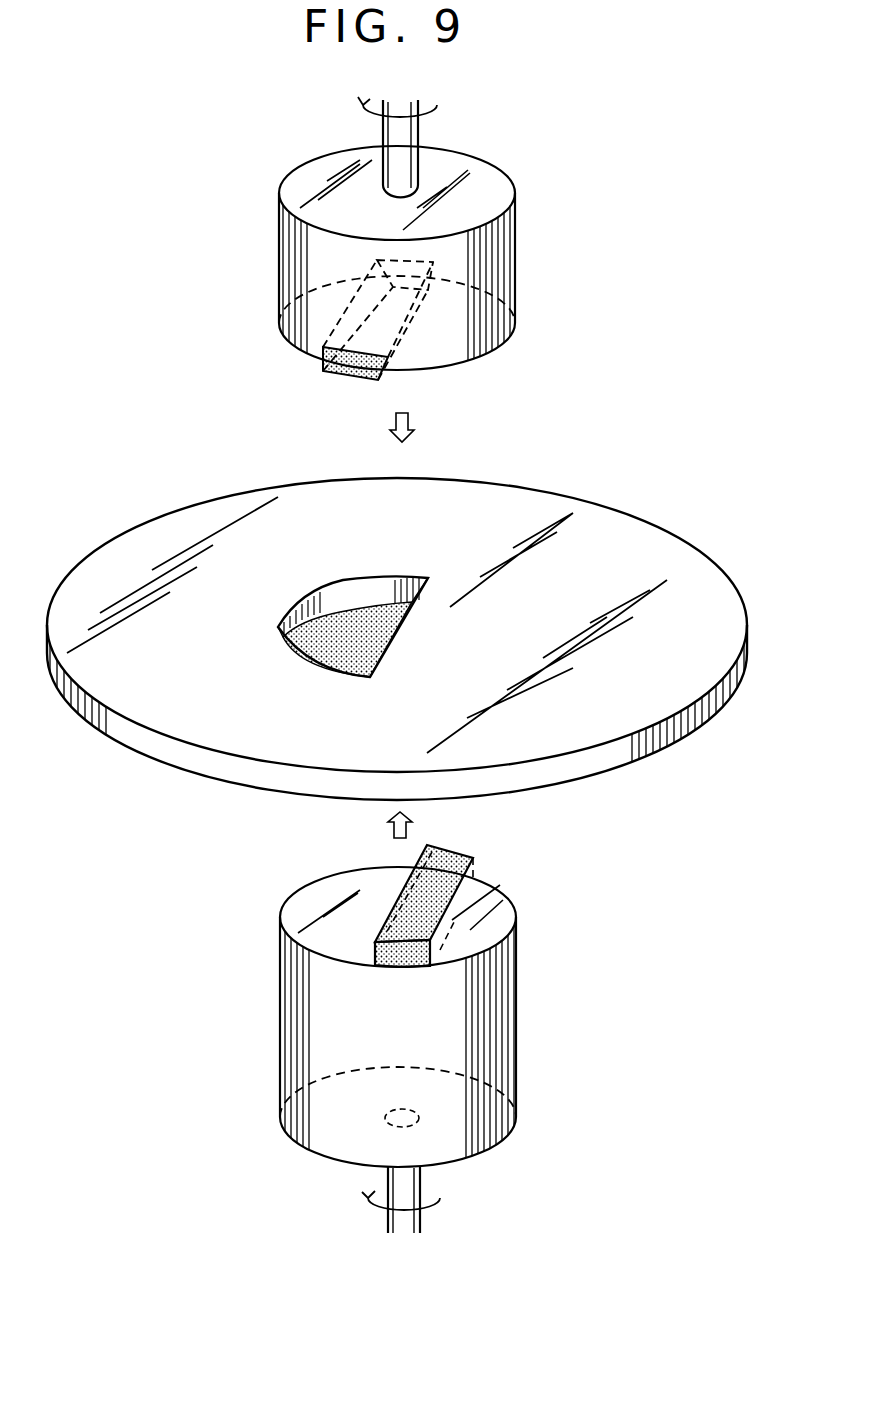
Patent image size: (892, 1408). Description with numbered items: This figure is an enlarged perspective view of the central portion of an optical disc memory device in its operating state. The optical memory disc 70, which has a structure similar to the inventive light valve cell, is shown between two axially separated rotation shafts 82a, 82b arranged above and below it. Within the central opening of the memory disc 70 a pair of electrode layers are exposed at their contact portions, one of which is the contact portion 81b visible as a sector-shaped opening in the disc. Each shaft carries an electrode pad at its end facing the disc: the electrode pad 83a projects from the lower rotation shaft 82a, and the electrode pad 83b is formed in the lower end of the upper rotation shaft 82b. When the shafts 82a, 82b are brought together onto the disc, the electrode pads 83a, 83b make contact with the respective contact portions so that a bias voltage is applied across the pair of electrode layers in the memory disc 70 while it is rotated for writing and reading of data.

The optical memory disc 70 is at (636, 518).
The contact portion 81b is at (408, 588).
The rotation shaft 82a is at (292, 1012).
The rotation shaft 82b is at (278, 248).
The electrode pad 83a is at (387, 914).
The electrode pad 83b is at (332, 372).